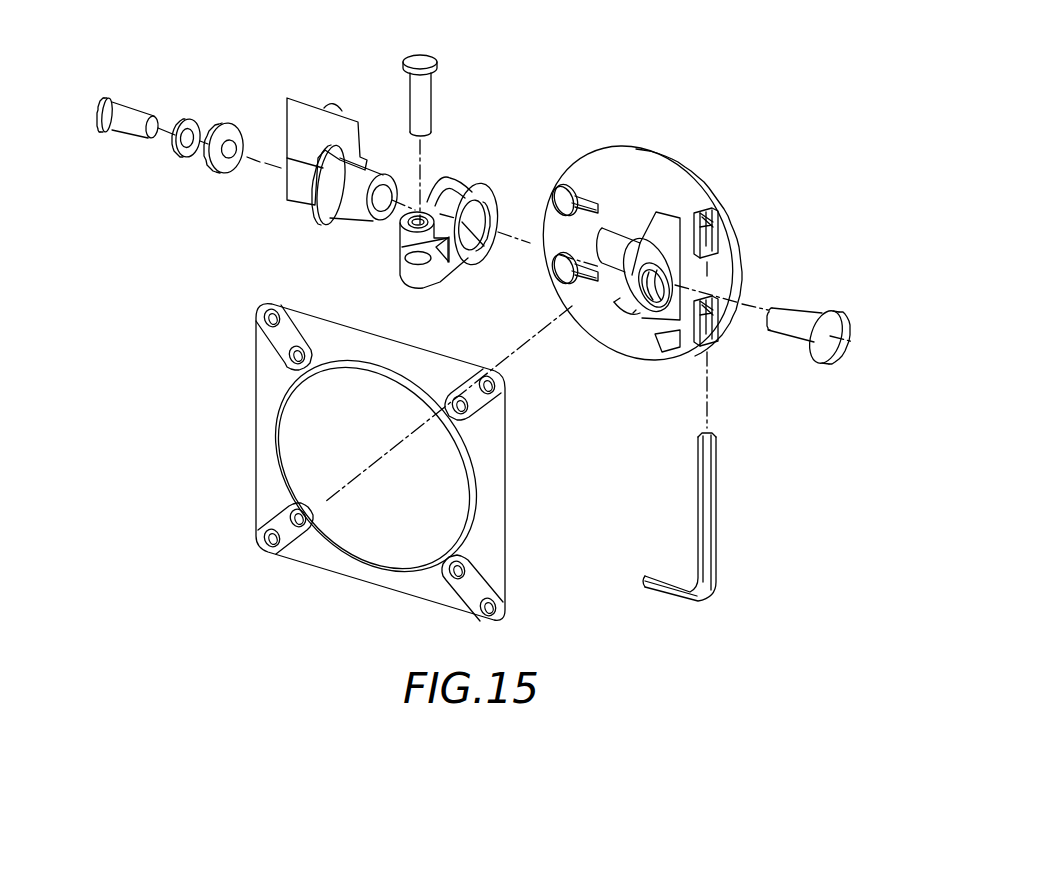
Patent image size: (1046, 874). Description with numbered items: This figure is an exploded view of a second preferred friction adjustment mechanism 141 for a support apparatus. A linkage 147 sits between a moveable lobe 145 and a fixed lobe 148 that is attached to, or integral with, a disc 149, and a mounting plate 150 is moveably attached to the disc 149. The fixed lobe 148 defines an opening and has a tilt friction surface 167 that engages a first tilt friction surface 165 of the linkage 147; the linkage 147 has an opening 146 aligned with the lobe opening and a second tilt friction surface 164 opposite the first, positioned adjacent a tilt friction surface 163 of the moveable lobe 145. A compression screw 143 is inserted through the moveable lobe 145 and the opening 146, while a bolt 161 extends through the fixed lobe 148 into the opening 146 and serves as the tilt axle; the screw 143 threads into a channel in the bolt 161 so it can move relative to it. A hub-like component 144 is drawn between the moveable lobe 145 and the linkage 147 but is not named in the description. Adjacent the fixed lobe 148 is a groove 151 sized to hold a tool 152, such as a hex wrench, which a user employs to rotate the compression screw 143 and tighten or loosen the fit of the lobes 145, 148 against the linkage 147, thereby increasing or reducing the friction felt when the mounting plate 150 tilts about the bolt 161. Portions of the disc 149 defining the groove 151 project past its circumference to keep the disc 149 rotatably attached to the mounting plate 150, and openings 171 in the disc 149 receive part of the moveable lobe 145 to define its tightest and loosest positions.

The friction adjustment mechanism 141 is at (156, 84).
The compression screw 143 is at (135, 134).
The hub 144 is at (355, 212).
The moveable lobe 145 is at (307, 118).
The opening 146 is at (482, 252).
The linkage 147 is at (474, 184).
The fixed lobe 148 is at (658, 224).
The disc 149 is at (672, 161).
The mounting plate 150 is at (315, 572).
The groove 151 is at (713, 233).
The tool 152 is at (665, 588).
The bolt 161 is at (795, 348).
The tilt friction surface 163 is at (320, 218).
The second tilt friction surface 164 is at (433, 175).
The first tilt friction surface 165 is at (487, 196).
The tilt friction surface 167 is at (620, 308).
The openings 171 is at (573, 196).